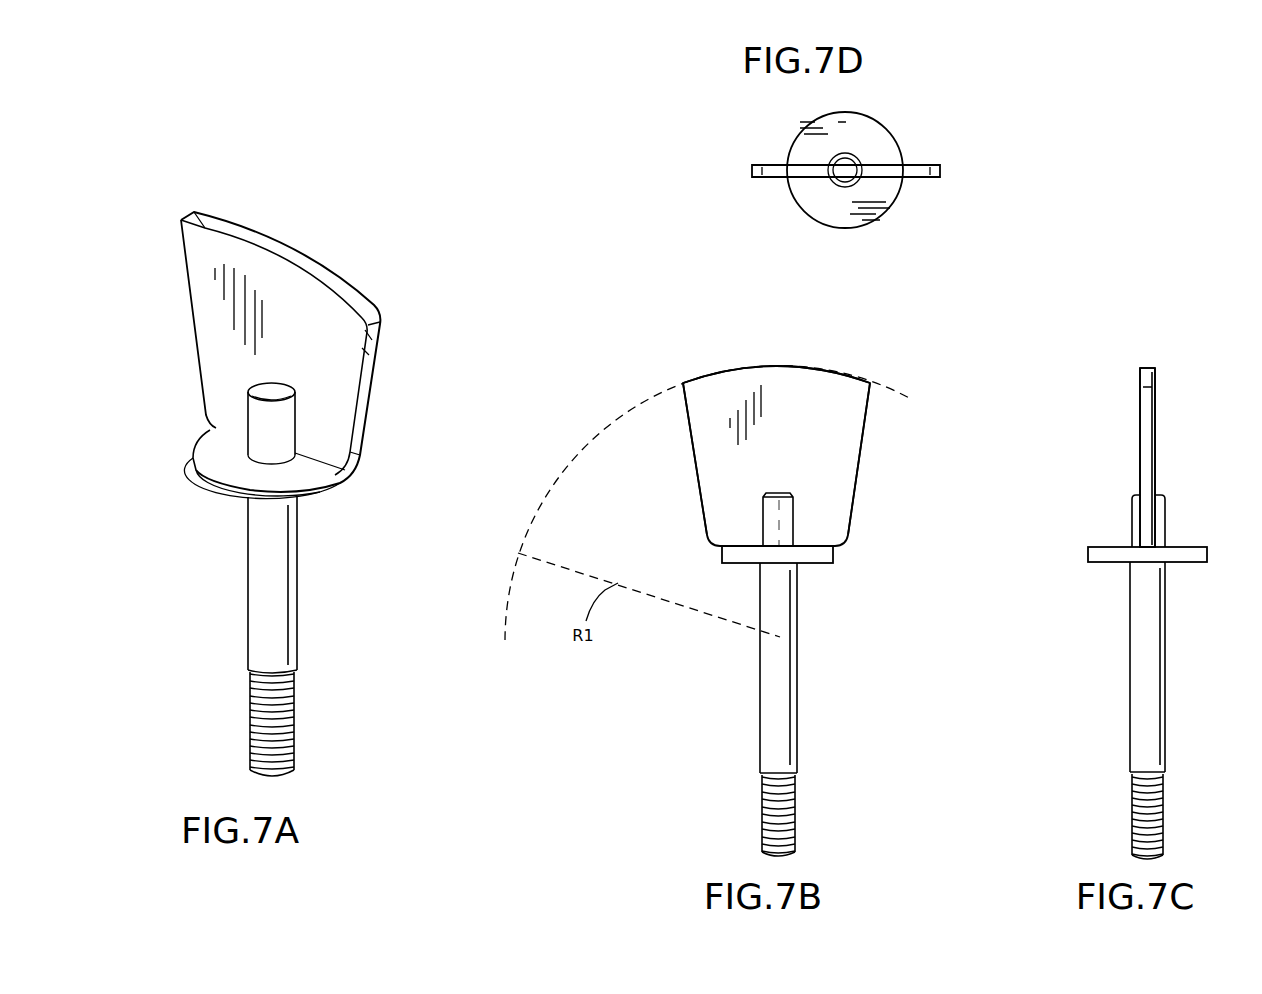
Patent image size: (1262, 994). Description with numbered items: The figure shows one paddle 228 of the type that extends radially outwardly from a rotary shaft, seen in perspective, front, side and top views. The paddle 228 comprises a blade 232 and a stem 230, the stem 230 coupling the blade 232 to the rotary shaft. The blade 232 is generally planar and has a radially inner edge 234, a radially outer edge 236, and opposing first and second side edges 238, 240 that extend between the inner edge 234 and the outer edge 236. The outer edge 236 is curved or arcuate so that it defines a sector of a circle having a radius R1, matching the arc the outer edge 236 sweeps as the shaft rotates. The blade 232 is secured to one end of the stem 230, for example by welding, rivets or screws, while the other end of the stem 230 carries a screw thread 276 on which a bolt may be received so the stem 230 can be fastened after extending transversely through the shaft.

In FIG. 7A, the paddle 228 is at (372, 270).
In FIG. 7B, the paddle 228 is at (702, 350).
In FIG. 7C, the paddle 228 is at (1207, 440).
In FIG. 7D, the paddle 228 is at (915, 112).
In FIG. 7A, the stem 230 is at (284, 604).
In FIG. 7B, the stem 230 is at (784, 656).
In FIG. 7C, the stem 230 is at (1148, 675).
In FIG. 7A, the blade 232 is at (340, 368).
In FIG. 7B, the blade 232 is at (843, 430).
In FIG. 7C, the blade 232 is at (1146, 403).
In FIG. 7D, the blade 232 is at (776, 178).
In FIG. 7A, the radially inner edge 234 is at (208, 423).
In FIG. 7B, the radially inner edge 234 is at (722, 540).
In FIG. 7C, the radially inner edge 234 is at (1148, 547).
In FIG. 7A, the radially outer edge 236 is at (247, 232).
In FIG. 7B, the radially outer edge 236 is at (817, 365).
In FIG. 7C, the radially outer edge 236 is at (1145, 365).
In FIG. 7D, the radially outer edge 236 is at (912, 178).
In FIG. 7A, the first side edge 238 is at (358, 428).
In FIG. 7B, the first side edge 238 is at (858, 488).
In FIG. 7C, the first side edge 238 is at (1143, 456).
In FIG. 7D, the first side edge 238 is at (945, 171).
In FIG. 7A, the second side edge 240 is at (186, 300).
In FIG. 7B, the second side edge 240 is at (690, 437).
In FIG. 7D, the second side edge 240 is at (752, 165).
In FIG. 7A, the screw thread 276 is at (293, 737).
In FIG. 7B, the screw thread 276 is at (793, 815).
In FIG. 7C, the screw thread 276 is at (1163, 815).